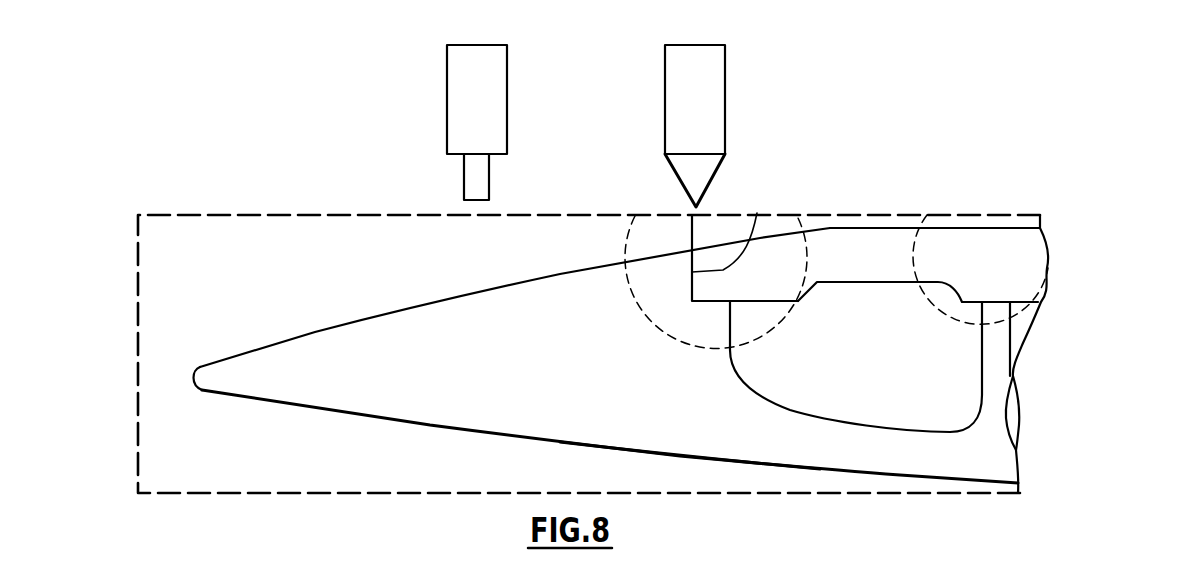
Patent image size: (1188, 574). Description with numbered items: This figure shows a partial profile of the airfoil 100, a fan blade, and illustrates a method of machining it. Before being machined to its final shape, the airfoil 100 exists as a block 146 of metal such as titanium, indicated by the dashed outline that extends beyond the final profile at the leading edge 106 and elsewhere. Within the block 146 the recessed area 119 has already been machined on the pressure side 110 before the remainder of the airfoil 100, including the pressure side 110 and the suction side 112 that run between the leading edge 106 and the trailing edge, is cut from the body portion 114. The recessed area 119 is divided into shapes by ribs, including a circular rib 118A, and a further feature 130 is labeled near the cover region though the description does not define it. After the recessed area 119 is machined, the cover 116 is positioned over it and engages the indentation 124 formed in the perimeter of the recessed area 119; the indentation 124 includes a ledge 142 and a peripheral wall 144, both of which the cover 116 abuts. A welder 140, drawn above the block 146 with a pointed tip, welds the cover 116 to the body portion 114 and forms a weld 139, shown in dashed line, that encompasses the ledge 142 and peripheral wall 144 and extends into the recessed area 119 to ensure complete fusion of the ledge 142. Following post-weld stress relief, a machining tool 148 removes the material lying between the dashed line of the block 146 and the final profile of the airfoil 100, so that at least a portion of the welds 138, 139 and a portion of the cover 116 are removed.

The airfoil 100 is at (1053, 223).
The leading edge 106 is at (195, 378).
The pressure side 110 is at (297, 343).
The suction side 112 is at (312, 408).
The body portion 114 is at (697, 438).
The cover 116 is at (978, 253).
The circular rib 118A is at (1000, 381).
The recessed area 119 is at (950, 362).
The indentation 124 is at (690, 302).
The notch 130 is at (962, 302).
The weld 138 is at (946, 248).
The weld 139 is at (780, 269).
The welder 140 is at (725, 45).
The ledge 142 is at (713, 301).
The peripheral wall 144 is at (757, 213).
The block 146 is at (270, 258).
The machining tool 148 is at (507, 45).